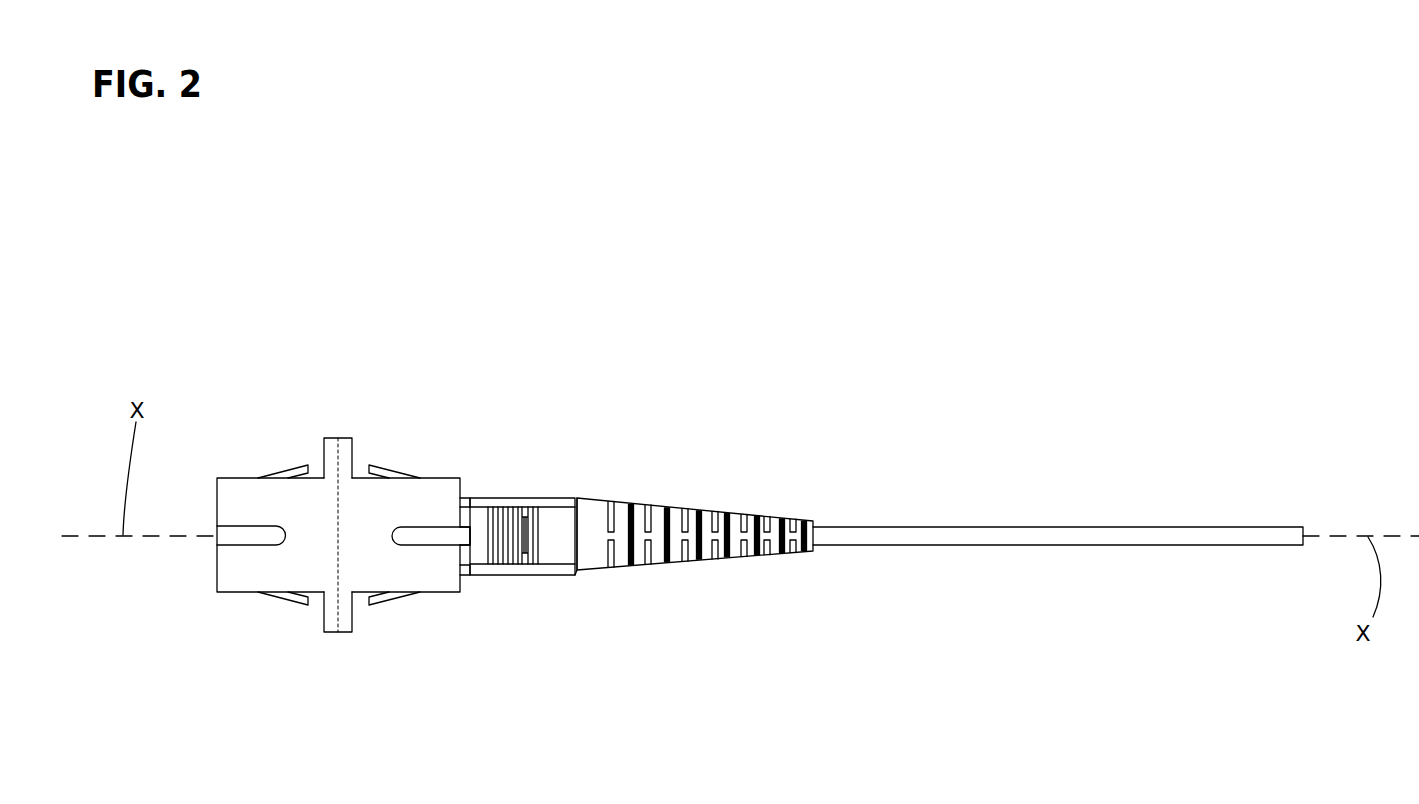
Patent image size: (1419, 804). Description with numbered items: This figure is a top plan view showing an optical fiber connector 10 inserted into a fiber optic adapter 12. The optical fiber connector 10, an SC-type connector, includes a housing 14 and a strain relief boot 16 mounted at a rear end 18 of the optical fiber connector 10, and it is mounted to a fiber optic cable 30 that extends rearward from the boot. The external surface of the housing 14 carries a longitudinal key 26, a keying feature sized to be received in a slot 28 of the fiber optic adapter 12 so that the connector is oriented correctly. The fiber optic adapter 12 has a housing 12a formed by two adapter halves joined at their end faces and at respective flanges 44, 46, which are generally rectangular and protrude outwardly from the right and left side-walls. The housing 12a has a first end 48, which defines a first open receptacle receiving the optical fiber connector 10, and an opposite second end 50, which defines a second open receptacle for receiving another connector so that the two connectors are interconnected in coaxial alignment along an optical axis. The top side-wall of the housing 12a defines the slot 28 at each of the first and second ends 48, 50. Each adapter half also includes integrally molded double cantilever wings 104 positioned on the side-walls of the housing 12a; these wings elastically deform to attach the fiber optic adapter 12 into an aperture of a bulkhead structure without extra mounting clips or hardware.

The optical fiber connector 10 is at (611, 485).
The fiber optic adapter 12 is at (347, 650).
The housing 12a is at (274, 578).
The housing 14 is at (470, 497).
The strain relief boot 16 is at (690, 503).
The rear end 18 is at (585, 584).
The longitudinal key 26 is at (462, 538).
The slot 28 is at (237, 535).
The fiber optic cable 30 is at (989, 535).
The flange 44 is at (331, 438).
The flange 46 is at (345, 438).
The first end 48 is at (456, 472).
The second end 50 is at (196, 600).
The double cantilever wings 104 is at (292, 466).